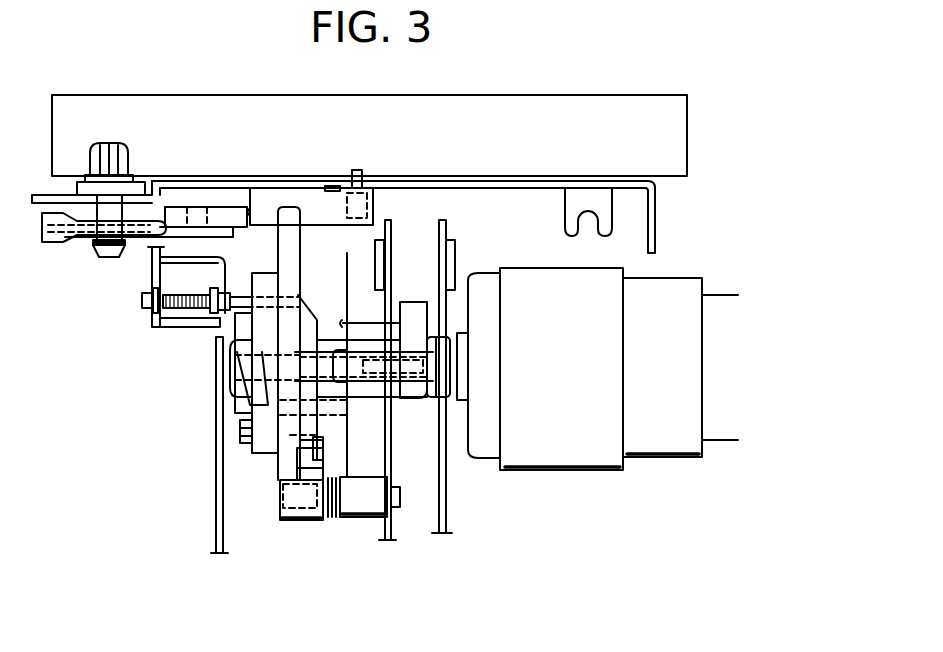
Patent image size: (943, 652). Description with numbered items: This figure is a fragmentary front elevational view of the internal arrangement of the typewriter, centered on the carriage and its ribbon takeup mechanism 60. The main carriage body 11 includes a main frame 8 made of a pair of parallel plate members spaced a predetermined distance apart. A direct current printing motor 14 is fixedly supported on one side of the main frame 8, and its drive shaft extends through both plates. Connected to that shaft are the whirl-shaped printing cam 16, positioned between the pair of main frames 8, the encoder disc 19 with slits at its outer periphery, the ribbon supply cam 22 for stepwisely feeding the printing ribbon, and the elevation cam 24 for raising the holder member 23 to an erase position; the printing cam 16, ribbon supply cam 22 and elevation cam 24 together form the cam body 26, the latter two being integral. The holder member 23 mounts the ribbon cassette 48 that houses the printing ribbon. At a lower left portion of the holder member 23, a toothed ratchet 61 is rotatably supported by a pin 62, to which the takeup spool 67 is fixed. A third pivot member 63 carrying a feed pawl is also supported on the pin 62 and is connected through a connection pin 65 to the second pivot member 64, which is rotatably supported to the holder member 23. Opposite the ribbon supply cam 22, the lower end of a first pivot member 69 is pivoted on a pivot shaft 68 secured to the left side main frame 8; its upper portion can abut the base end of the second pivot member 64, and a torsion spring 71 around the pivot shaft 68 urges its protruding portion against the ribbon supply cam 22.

The main frame 8 is at (389, 536).
The main carriage body 11 is at (458, 582).
The direct current printing motor 14 is at (660, 458).
The printing cam 16 is at (413, 302).
The encoder disc 19 is at (343, 290).
The ribbon supply cam 22 is at (297, 420).
The holder member 23 is at (656, 222).
The elevation cam 24 is at (268, 457).
The cam body 26 is at (298, 582).
The ribbon cassette 48 is at (495, 97).
The ribbon takeup mechanism 60 is at (196, 168).
The ratchet 61 is at (68, 244).
The pin 62 is at (112, 258).
The third pivot member 63 is at (248, 210).
The second pivot member 64 is at (329, 187).
The connection pin 65 is at (205, 204).
The takeup spool 67 is at (128, 160).
The pivot shaft 68 is at (362, 518).
The first pivot member 69 is at (280, 463).
The torsion spring 71 is at (318, 437).